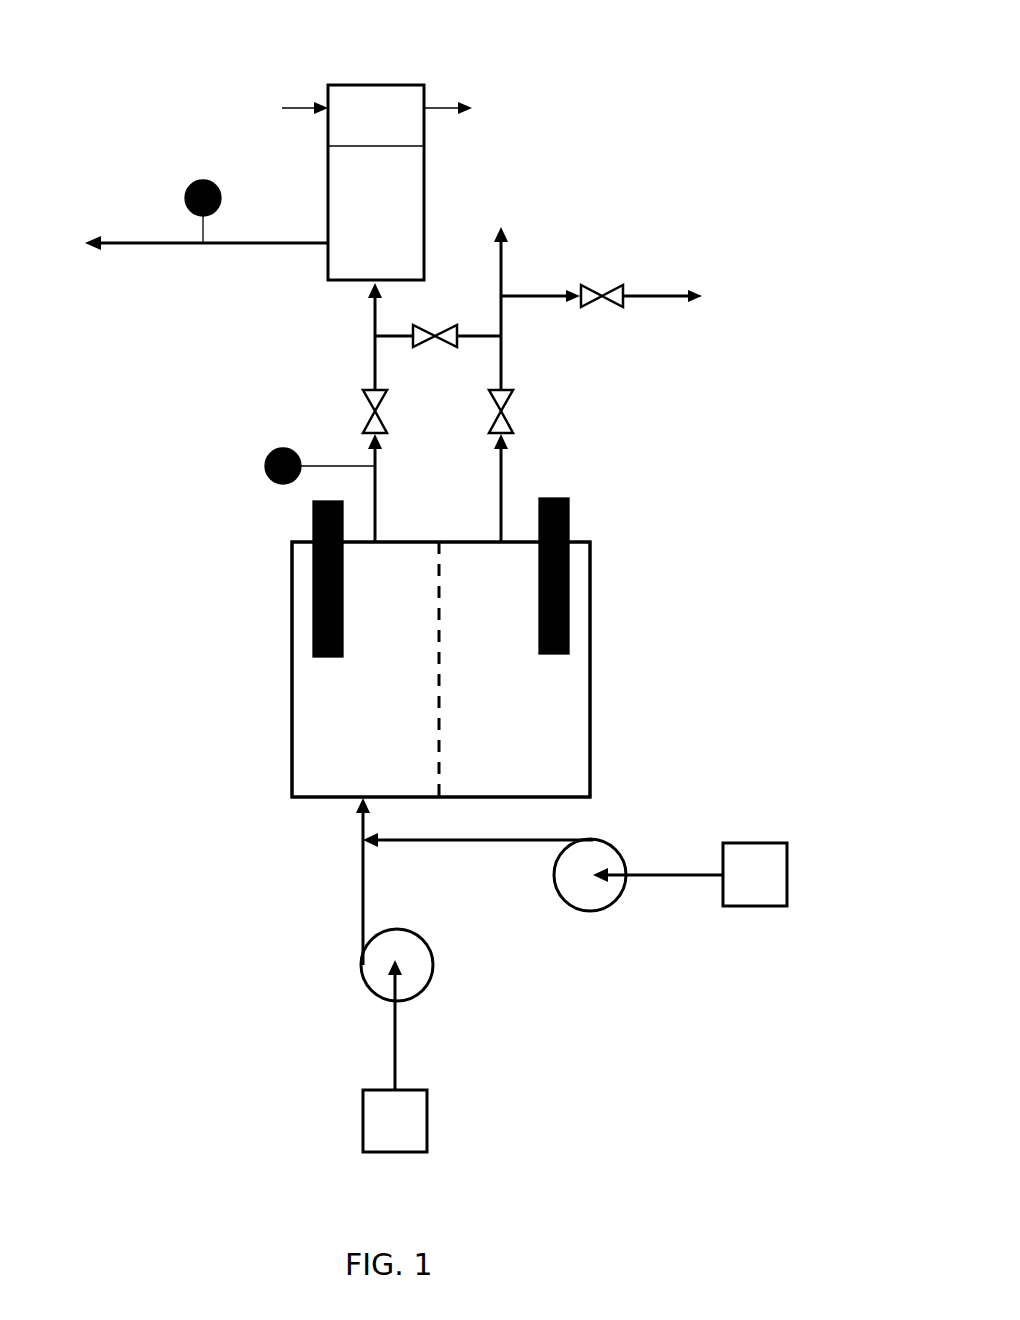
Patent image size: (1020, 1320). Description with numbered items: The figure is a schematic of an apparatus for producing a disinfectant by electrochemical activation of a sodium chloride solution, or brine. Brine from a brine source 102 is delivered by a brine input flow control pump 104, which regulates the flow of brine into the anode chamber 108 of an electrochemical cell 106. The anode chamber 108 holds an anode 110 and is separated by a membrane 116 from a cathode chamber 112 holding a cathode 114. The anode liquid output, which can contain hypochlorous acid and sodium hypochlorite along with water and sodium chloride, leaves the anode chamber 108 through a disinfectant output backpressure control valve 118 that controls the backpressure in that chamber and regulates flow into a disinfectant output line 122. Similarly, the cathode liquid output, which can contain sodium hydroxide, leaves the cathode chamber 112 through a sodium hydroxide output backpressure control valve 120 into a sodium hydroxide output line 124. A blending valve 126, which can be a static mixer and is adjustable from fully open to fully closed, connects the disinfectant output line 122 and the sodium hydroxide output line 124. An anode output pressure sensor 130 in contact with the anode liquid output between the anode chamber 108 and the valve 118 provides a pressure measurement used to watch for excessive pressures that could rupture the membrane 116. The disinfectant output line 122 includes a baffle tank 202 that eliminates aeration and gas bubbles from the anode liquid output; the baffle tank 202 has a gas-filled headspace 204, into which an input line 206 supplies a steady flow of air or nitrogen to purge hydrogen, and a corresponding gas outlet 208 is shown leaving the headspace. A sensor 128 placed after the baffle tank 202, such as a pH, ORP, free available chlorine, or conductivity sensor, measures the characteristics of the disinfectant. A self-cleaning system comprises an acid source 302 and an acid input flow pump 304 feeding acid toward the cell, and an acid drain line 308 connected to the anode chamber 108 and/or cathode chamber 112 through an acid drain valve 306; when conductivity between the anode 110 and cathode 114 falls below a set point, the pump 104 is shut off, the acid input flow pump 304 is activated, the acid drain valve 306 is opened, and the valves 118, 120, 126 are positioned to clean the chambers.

The brine source 102 is at (422, 1121).
The brine input flow control pump 104 is at (427, 1009).
The electrochemical cell 106 is at (600, 707).
The anode chamber 108 is at (365, 669).
The anode 110 is at (347, 579).
The cathode chamber 112 is at (514, 669).
The cathode 114 is at (533, 576).
The membrane 116 is at (458, 669).
The disinfectant output backpressure control valve 118 is at (349, 466).
The sodium hydroxide output backpressure control valve 120 is at (524, 466).
The disinfectant output line 122 is at (233, 313).
The sodium hydroxide output line 124 is at (518, 308).
The blending valve 126 is at (438, 324).
The sensor 128 is at (177, 211).
The anode output pressure sensor 130 is at (297, 466).
The baffle tank 202 is at (387, 78).
The headspace 204 is at (376, 130).
The input line 206 is at (295, 94).
The outlet 208 is at (454, 96).
The acid source 302 is at (755, 897).
The acid input flow pump 304 is at (638, 895).
The acid drain valve 306 is at (602, 308).
The acid drain line 308 is at (601, 287).